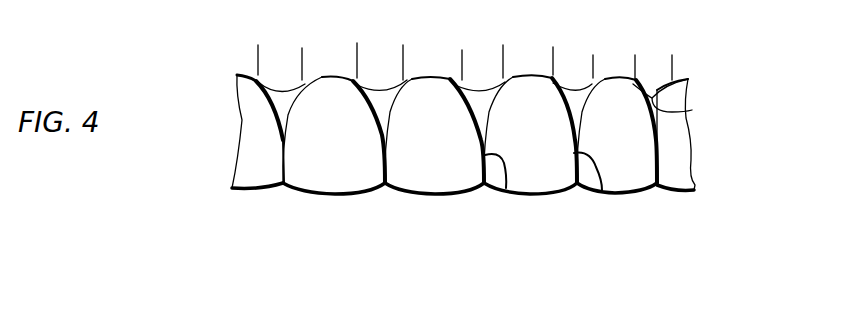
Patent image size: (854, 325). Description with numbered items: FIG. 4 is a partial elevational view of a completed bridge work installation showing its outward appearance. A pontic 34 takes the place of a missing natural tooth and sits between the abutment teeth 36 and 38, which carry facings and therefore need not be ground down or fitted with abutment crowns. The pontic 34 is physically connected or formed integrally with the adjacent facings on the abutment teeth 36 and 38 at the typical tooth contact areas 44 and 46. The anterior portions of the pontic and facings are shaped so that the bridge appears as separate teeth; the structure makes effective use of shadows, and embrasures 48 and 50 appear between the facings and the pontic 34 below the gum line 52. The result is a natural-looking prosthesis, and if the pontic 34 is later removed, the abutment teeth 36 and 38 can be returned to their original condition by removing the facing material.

The pontic 34 is at (552, 177).
The abutment tooth 36 is at (398, 182).
The abutment tooth 38 is at (630, 177).
The tooth contact area 44 is at (602, 190).
The tooth contact area 46 is at (503, 190).
The embrasure 48 is at (483, 107).
The embrasure 50 is at (577, 100).
The gum line 52 is at (692, 110).